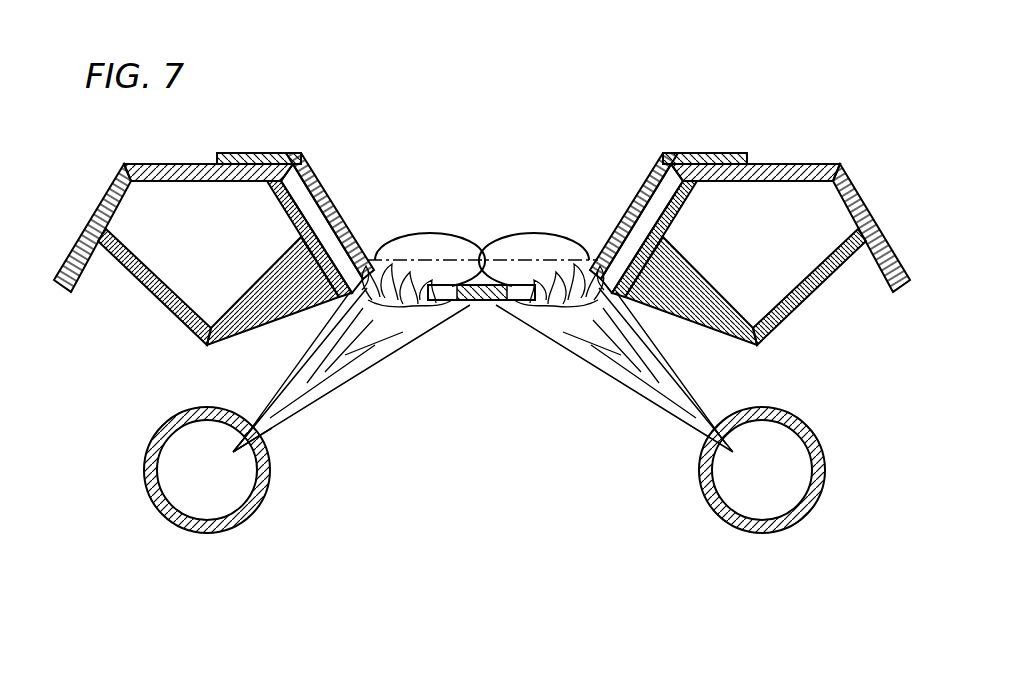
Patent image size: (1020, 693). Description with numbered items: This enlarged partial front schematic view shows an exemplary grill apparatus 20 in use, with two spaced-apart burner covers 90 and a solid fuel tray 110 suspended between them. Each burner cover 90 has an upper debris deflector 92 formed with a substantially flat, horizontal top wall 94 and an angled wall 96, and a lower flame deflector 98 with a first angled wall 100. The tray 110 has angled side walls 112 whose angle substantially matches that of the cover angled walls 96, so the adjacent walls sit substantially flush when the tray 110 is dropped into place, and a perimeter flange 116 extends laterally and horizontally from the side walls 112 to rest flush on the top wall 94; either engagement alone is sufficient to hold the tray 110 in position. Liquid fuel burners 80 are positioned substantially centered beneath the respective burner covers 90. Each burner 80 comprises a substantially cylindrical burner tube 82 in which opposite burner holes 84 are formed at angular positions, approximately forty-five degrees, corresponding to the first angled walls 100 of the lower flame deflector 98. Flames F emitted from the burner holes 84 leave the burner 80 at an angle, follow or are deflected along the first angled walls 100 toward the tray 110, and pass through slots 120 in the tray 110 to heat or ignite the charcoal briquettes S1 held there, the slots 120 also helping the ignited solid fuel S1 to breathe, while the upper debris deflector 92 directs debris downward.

The grill apparatus 20 is at (697, 67).
The liquid fuel burner 80 is at (813, 507).
The burner tube 82 is at (200, 528).
The burner holes 84 is at (158, 430).
The burner cover 90 is at (852, 322).
The upper debris deflector 92 is at (852, 145).
The top wall 94 is at (783, 163).
The angled wall 96 is at (878, 201).
The lower flame deflector 98 is at (152, 307).
The first angled wall 100 is at (270, 297).
The solid fuel tray 110 is at (360, 189).
The angled side wall 112 is at (650, 170).
The perimeter flange 116 is at (703, 152).
The slots 120 is at (617, 227).
The charcoal briquettes S1 is at (437, 236).
The flames F is at (350, 378).